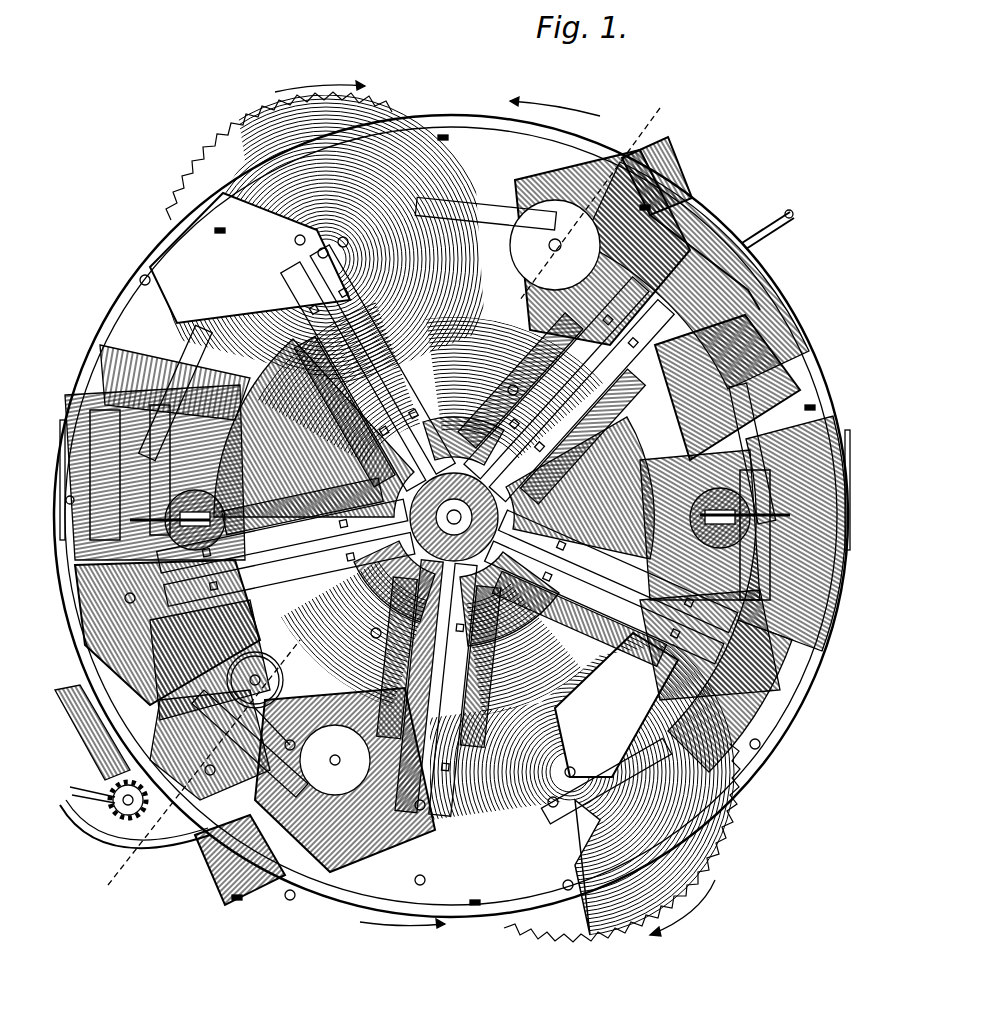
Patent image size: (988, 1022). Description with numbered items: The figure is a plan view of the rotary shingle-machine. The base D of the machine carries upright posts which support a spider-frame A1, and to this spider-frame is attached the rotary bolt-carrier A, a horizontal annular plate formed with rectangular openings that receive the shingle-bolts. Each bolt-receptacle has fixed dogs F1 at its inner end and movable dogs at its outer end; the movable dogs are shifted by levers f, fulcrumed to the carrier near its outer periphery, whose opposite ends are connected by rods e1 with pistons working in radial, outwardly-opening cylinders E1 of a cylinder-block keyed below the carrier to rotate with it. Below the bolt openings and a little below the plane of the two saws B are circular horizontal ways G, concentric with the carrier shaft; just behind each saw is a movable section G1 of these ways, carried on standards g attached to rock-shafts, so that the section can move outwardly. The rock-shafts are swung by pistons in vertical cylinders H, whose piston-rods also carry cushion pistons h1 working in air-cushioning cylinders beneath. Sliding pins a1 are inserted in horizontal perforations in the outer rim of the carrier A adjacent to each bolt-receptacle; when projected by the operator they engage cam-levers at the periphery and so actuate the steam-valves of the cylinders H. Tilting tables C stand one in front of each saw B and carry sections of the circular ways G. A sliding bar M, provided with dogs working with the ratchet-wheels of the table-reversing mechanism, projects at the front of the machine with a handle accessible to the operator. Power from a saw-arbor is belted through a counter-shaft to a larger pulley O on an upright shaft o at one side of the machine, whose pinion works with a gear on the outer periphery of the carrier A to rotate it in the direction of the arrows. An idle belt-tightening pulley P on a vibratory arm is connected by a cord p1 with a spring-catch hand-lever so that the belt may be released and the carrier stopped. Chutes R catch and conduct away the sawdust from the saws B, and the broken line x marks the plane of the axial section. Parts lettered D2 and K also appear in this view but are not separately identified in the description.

The rotary bolt-carrier A is at (451, 508).
The spider-frame A1 is at (444, 532).
The saws B is at (450, 517).
The tilting tables C is at (532, 511).
The base of the machine D is at (477, 531).
The plate D2 is at (538, 490).
The cylinders E1 is at (434, 492).
The fixed dogs F1 is at (444, 510).
The circular horizontal ways G is at (473, 483).
The movable sections of the circular ways G1 is at (431, 492).
The vertical cylinders H is at (457, 530).
The segment gear K is at (454, 517).
The sliding bar M is at (769, 235).
The larger pulley O is at (135, 838).
The upright shaft o is at (108, 803).
The idle pulley P is at (255, 680).
The cord p1 is at (277, 731).
The chutes R is at (217, 604).
The broken line x is at (385, 495).
The sliding pins a1 is at (460, 520).
The rods e1 is at (284, 684).
The levers f is at (238, 696).
The standards g is at (438, 508).
The pistons h1 is at (456, 512).